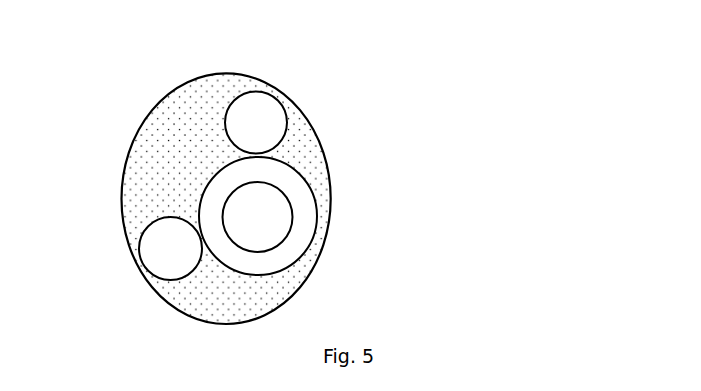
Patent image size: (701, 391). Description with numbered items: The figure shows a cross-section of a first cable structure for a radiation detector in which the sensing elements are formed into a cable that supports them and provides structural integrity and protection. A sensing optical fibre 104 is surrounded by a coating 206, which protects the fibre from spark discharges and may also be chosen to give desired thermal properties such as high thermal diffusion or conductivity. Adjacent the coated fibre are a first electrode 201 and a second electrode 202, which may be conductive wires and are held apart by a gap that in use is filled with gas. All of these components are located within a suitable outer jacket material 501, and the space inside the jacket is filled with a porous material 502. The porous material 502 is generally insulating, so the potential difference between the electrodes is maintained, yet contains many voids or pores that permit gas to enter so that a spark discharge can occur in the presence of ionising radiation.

The outer jacket material 501 is at (170, 92).
The porous material 502 is at (152, 153).
The first electrode 201 is at (275, 95).
The second electrode 202 is at (142, 239).
The optical fibre 104 is at (295, 212).
The coating 206 is at (307, 250).